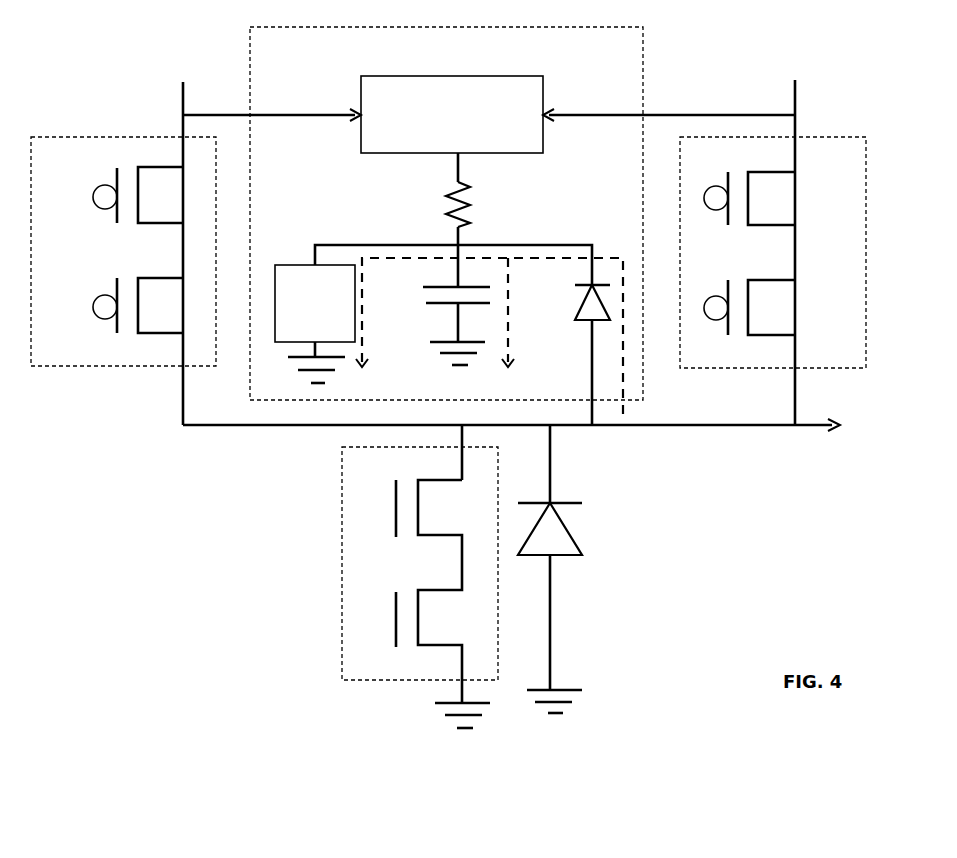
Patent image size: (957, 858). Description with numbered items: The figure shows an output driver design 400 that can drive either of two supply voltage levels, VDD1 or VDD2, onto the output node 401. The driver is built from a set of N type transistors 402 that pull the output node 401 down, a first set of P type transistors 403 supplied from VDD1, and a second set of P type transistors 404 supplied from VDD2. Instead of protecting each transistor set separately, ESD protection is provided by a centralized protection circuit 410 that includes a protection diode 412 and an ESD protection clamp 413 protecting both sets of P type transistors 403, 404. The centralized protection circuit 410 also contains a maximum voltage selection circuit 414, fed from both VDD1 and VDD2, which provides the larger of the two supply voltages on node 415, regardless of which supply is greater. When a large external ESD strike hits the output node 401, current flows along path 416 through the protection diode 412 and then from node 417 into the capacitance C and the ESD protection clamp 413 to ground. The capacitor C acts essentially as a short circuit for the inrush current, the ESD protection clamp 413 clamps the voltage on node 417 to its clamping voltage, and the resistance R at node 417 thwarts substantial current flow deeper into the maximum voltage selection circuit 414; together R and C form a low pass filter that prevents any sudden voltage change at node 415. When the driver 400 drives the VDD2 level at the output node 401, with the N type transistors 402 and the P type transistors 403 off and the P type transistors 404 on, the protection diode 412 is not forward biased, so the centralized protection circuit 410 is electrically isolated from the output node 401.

The output driver design 400 is at (80, 669).
The output node 401 is at (705, 425).
The N type transistors 402 is at (345, 530).
The P type transistors 403 is at (75, 133).
The P type transistors 404 is at (817, 137).
The centralized protection circuit 410 is at (643, 93).
The protection diode 412 is at (571, 355).
The ESD protection clamp 413 is at (301, 325).
The maximum voltage selection circuit 414 is at (440, 138).
The node 415 is at (459, 163).
The path 416 is at (605, 257).
The node 417 is at (377, 243).